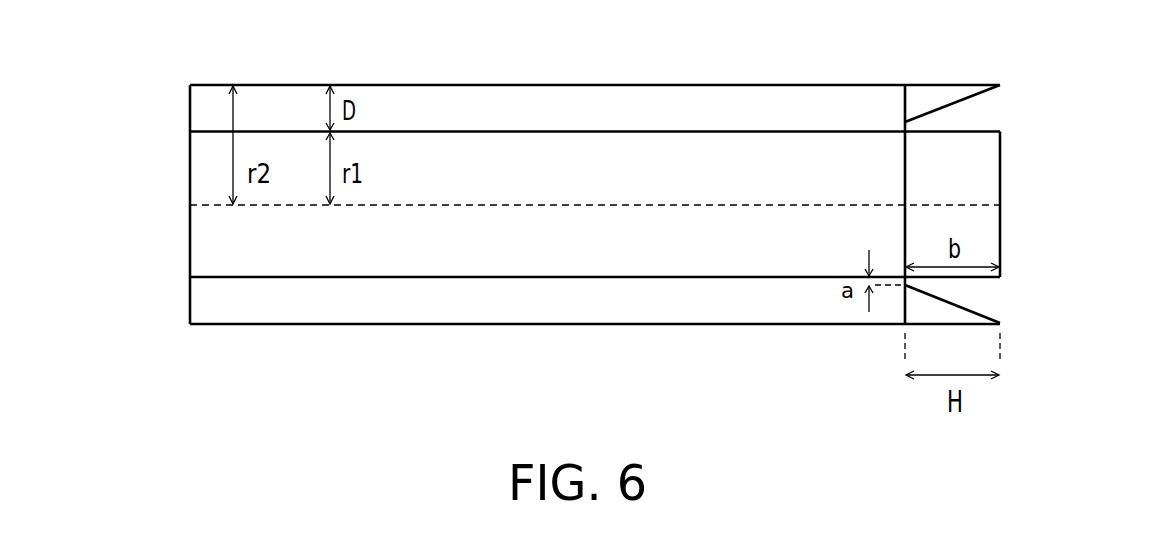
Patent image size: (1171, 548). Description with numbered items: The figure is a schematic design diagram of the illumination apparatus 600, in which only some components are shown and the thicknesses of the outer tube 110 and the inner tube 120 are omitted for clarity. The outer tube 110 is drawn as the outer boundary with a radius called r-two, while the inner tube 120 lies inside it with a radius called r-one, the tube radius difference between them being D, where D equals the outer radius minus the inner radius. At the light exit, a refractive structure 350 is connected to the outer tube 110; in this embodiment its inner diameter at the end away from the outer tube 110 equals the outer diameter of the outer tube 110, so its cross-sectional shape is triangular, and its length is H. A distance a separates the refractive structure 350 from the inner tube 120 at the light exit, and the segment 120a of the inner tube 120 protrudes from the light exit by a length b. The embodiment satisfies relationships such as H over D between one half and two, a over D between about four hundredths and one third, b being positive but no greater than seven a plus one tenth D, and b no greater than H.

The outer tube 110 is at (480, 85).
The inner tube 120 is at (608, 131).
The segment 120a is at (986, 130).
The refractive structure 350 is at (925, 98).
The illumination apparatus 600 is at (1133, 450).